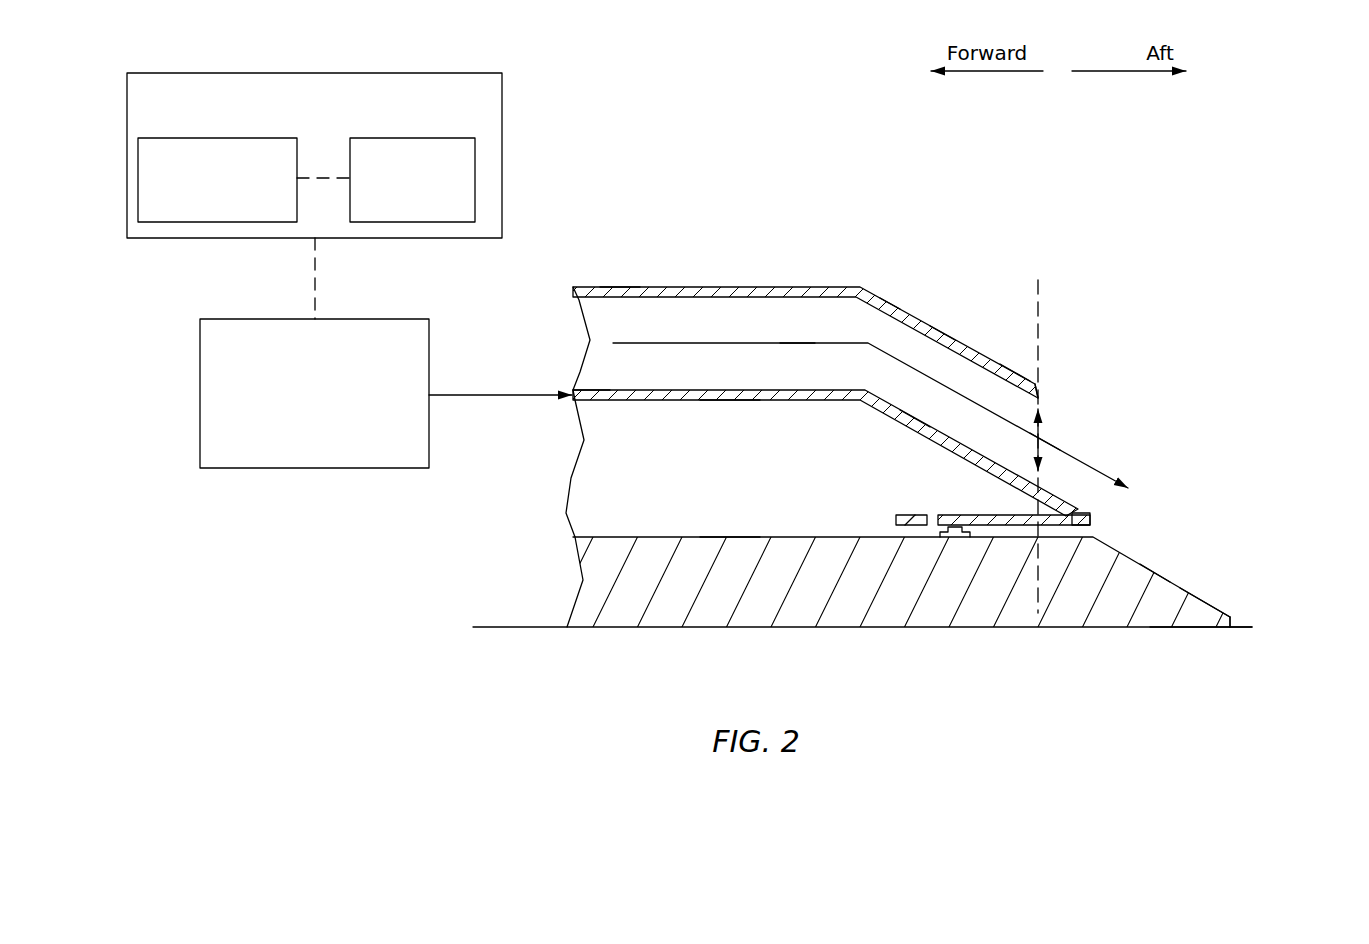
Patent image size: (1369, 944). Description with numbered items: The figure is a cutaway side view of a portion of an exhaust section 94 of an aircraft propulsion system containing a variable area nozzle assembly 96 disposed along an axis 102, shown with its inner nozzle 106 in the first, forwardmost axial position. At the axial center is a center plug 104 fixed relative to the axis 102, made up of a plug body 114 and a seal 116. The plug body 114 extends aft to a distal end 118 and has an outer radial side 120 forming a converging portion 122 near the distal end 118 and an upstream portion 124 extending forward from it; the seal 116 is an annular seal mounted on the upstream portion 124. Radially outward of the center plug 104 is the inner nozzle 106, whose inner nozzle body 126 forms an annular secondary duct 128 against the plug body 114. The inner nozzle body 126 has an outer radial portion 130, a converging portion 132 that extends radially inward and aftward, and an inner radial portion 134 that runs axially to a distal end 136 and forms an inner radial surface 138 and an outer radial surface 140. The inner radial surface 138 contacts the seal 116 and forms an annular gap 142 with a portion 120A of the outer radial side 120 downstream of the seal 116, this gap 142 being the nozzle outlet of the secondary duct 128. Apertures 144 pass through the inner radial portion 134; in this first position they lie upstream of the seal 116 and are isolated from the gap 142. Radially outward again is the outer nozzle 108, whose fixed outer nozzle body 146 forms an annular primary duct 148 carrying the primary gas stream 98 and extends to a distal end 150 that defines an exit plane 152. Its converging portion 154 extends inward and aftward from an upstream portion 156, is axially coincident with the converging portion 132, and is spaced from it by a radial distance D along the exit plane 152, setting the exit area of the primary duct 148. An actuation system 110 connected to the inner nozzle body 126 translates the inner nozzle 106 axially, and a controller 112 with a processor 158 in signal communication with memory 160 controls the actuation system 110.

The exhaust section 94 is at (1178, 177).
The variable area nozzle assembly 96 is at (1087, 331).
The primary gas stream 98 is at (797, 340).
The axis 102 is at (1197, 628).
The center plug 104 is at (1187, 551).
The inner nozzle 106 is at (896, 447).
The outer nozzle 108 is at (915, 282).
The actuation system 110 is at (334, 444).
The controller 112 is at (502, 103).
The plug body 114 is at (913, 587).
The seal 116 is at (957, 533).
The distal end 118 is at (1232, 618).
The outer radial side 120 is at (668, 537).
The portion of the outer radial side 120A is at (1080, 508).
The converging portion 122 is at (1227, 580).
The upstream portion 124 is at (724, 516).
The inner nozzle body 126 is at (698, 376).
The secondary duct 128 is at (798, 456).
The outer radial portion 130 is at (590, 386).
The converging portion 132 is at (1042, 438).
The inner radial portion 134 is at (1044, 612).
The distal end 136 is at (896, 518).
The inner radial surface 138 is at (1066, 527).
The outer radial surface 140 is at (985, 515).
The gap 142 is at (1088, 512).
The apertures 144 is at (921, 538).
The outer nozzle body 146 is at (840, 272).
The primary duct 148 is at (819, 376).
The distal end 150 is at (1062, 382).
The exit plane 152 is at (1040, 300).
The converging portion 154 is at (942, 320).
The upstream portion 156 is at (622, 287).
The processor 158 is at (232, 212).
The memory 160 is at (426, 212).
The distance D is at (1042, 424).